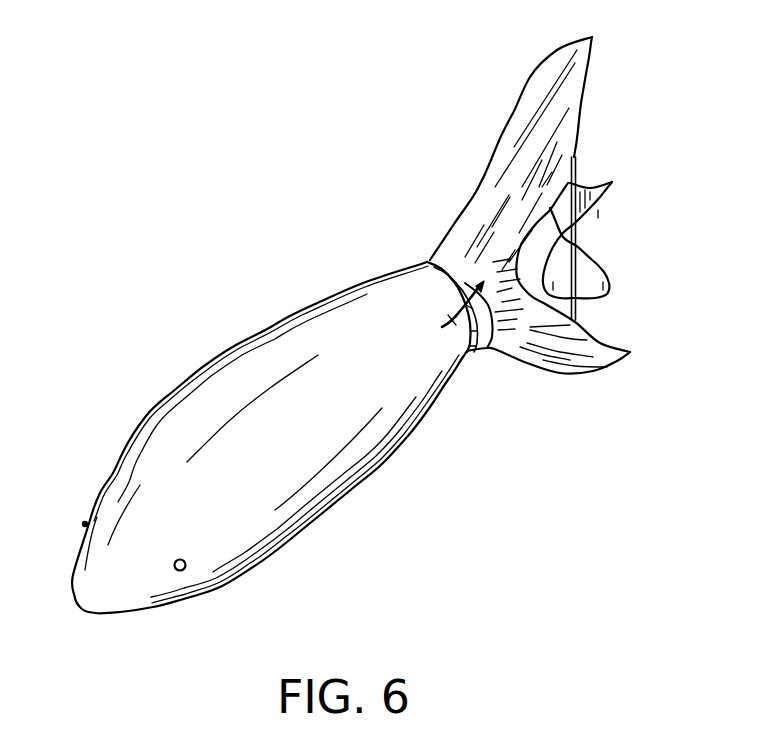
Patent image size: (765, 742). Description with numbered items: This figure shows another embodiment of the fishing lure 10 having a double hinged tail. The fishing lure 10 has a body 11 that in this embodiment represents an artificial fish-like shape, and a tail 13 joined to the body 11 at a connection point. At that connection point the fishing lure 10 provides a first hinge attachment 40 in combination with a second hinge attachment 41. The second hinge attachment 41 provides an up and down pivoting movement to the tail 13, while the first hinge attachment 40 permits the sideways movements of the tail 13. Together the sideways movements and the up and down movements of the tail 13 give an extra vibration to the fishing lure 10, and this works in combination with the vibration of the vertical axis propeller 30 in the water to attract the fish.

The fishing lure 10 is at (88, 360).
The body 11 is at (245, 338).
The tail 13 is at (502, 137).
The vertical axis propeller 30 is at (604, 265).
The first hinge attachment 40 is at (487, 336).
The second hinge attachment 41 is at (428, 260).